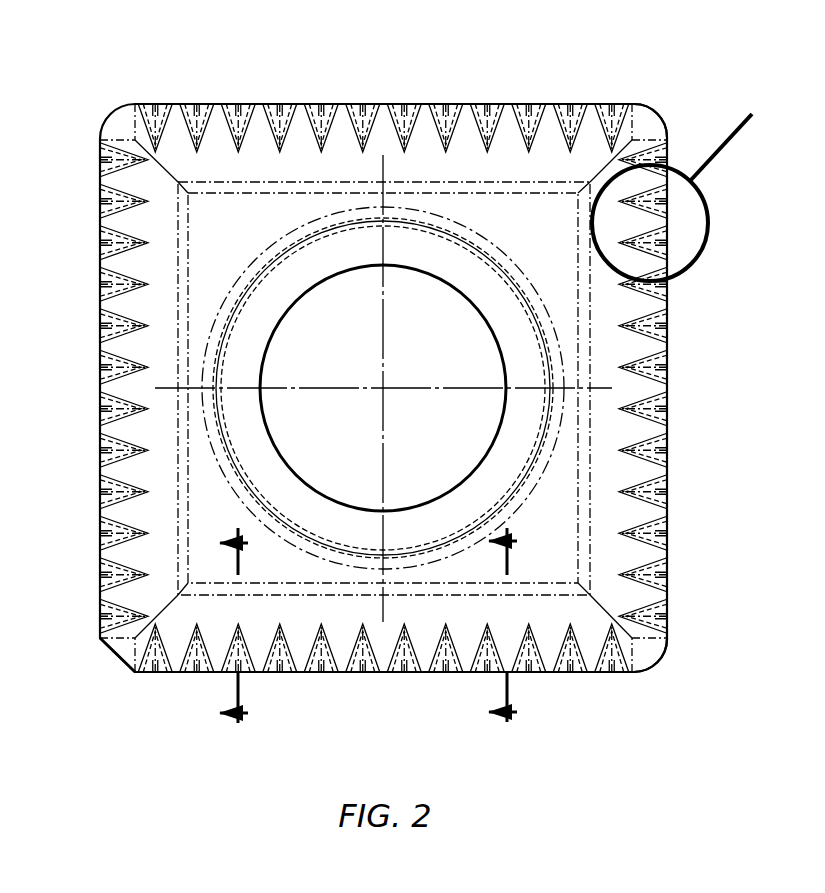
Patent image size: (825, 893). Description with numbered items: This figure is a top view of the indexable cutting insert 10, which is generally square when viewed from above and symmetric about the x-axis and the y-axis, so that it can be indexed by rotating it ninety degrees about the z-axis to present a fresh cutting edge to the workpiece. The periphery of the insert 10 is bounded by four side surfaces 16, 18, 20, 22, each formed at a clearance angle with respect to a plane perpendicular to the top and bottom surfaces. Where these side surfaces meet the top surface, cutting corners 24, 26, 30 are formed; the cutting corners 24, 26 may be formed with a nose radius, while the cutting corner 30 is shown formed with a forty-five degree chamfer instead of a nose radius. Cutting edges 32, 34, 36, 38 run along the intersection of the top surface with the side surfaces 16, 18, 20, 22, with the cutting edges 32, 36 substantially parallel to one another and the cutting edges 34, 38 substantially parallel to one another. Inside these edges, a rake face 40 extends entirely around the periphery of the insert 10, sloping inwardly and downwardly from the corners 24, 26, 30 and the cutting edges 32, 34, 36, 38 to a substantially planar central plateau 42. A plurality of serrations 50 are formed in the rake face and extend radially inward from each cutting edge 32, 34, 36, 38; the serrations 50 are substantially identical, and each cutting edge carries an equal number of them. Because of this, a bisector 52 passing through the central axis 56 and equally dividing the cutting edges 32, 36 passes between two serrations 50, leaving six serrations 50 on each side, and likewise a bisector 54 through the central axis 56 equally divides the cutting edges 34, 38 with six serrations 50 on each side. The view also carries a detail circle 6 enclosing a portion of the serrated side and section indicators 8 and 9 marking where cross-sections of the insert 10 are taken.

The indexable cutting insert 10 is at (681, 742).
The side surface 16 is at (383, 685).
The side surface 18 is at (679, 388).
The side surface 20 is at (383, 92).
The side surface 22 is at (89, 355).
The cutting corner 24 is at (664, 672).
The cutting corner 26 is at (663, 103).
The cutting corner 30 is at (105, 672).
The cutting edge 32 is at (190, 672).
The cutting edge 34 is at (668, 313).
The cutting edge 36 is at (580, 103).
The cutting edge 38 is at (100, 317).
The rake face 40 is at (150, 225).
The central plateau 42 is at (215, 213).
The serrations 50 is at (100, 460).
The bisector 52 is at (383, 265).
The bisector 54 is at (293, 388).
The central axis 56 is at (386, 388).
The detail view circle (FIG. 6) 6 is at (685, 189).
The section line 8- 8 is at (228, 629).
The section line 9- 9 is at (497, 628).